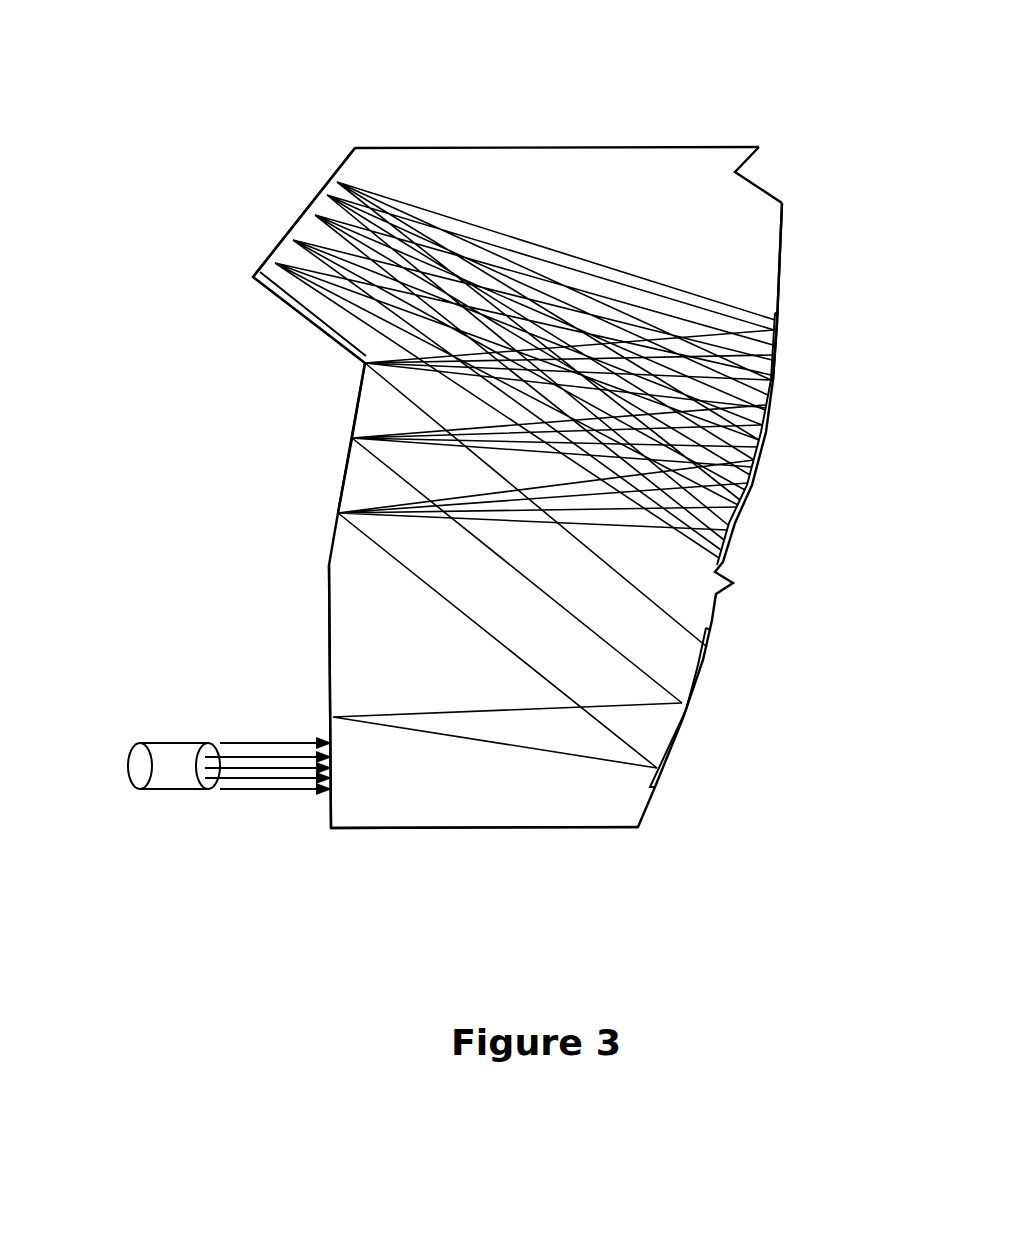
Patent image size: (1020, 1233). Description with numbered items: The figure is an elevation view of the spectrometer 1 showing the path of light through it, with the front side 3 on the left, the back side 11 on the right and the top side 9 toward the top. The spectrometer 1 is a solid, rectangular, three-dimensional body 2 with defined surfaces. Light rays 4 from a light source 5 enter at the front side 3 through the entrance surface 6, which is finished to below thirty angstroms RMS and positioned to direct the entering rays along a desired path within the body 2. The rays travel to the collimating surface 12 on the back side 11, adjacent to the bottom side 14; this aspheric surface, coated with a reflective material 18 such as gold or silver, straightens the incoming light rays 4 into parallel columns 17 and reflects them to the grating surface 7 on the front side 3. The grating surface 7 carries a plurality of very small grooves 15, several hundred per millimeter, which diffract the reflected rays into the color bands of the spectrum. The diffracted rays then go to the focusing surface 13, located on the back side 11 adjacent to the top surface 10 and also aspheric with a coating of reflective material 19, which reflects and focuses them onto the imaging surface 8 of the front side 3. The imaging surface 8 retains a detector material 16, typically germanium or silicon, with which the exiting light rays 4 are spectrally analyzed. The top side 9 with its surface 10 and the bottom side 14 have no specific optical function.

The spectrometer 1 is at (237, 110).
The body 2 is at (791, 92).
The front side 3 is at (180, 585).
The light rays 4 is at (264, 792).
The light source 5 is at (170, 780).
The entrance surface 6 is at (331, 677).
The grating surface 7 is at (347, 478).
The imaging surface 8 is at (287, 235).
The top side 9 is at (535, 100).
The top surface 10 is at (457, 147).
The back side 11 is at (772, 595).
The collimating surface 12 is at (684, 718).
The focusing surface 13 is at (766, 432).
The bottom side 14 is at (515, 866).
The grooves 15 is at (359, 405).
The detector material 16 is at (335, 182).
The parallel columns 17 is at (520, 660).
The reflective coating material 18 is at (702, 660).
The reflective material coating 19 is at (775, 368).